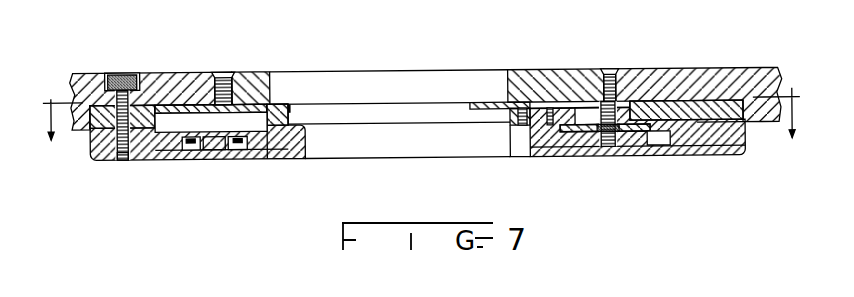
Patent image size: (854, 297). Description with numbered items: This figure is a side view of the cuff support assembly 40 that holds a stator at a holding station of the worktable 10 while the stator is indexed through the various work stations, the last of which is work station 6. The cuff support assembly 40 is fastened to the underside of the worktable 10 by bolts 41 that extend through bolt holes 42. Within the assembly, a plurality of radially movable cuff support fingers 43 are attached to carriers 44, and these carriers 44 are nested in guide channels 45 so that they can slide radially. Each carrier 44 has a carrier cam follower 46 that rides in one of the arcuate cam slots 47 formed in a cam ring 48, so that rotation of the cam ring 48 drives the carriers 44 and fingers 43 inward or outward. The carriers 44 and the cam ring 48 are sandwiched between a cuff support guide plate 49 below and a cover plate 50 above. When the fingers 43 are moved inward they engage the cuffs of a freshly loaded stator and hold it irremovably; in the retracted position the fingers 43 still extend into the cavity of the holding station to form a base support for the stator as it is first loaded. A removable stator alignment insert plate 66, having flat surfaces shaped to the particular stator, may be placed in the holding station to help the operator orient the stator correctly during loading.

The work station 6 is at (422, 133).
The worktable 10 is at (193, 70).
The cuff support assembly 40 is at (697, 164).
The bolts 41 is at (122, 72).
The bolt holes 42 is at (118, 160).
The cuff support fingers 43 is at (490, 105).
The carriers 44 is at (515, 128).
The guide channels 45 is at (745, 126).
The carrier cam follower 46 is at (613, 142).
The arcuate cam slots 47 is at (182, 145).
The cam ring 48 is at (168, 145).
The cuff support guide plate 49 is at (287, 156).
The cover plate 50 is at (290, 110).
The removable stator alignment insert plate 66 is at (250, 78).